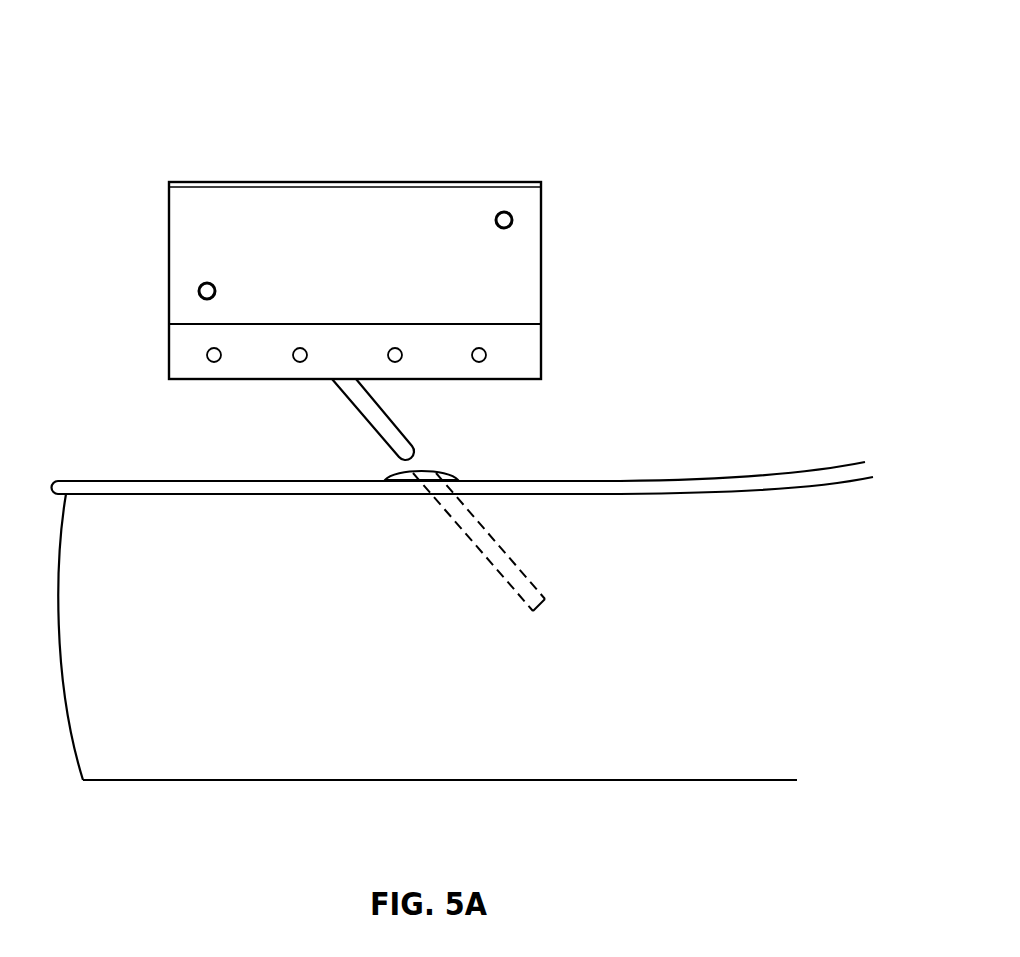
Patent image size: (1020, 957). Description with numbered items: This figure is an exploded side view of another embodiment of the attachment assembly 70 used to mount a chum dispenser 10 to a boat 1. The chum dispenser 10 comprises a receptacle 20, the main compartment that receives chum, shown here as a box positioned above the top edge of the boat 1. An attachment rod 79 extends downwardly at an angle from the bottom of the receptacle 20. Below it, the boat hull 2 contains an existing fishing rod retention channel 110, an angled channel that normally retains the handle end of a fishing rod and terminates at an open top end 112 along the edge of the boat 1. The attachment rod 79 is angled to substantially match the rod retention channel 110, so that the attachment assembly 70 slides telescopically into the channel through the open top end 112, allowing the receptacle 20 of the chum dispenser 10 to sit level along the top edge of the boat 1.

The chum dispenser 10 is at (430, 233).
The receptacle 20 is at (523, 262).
The attachment assembly 70 is at (430, 408).
The attachment rod 79 is at (408, 415).
The boat 1 is at (463, 392).
The boat hull 2 is at (427, 626).
The open top end 112 is at (420, 468).
The rod retention channel 110 is at (520, 576).